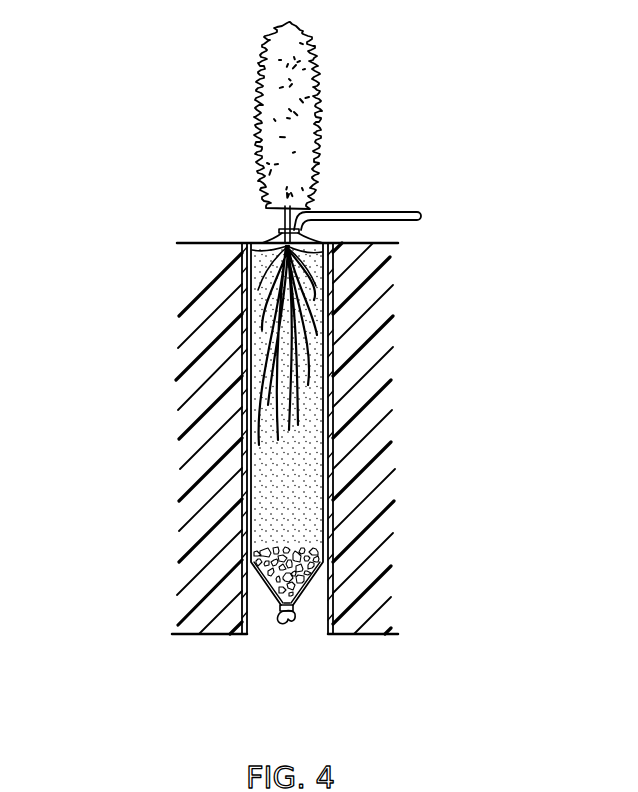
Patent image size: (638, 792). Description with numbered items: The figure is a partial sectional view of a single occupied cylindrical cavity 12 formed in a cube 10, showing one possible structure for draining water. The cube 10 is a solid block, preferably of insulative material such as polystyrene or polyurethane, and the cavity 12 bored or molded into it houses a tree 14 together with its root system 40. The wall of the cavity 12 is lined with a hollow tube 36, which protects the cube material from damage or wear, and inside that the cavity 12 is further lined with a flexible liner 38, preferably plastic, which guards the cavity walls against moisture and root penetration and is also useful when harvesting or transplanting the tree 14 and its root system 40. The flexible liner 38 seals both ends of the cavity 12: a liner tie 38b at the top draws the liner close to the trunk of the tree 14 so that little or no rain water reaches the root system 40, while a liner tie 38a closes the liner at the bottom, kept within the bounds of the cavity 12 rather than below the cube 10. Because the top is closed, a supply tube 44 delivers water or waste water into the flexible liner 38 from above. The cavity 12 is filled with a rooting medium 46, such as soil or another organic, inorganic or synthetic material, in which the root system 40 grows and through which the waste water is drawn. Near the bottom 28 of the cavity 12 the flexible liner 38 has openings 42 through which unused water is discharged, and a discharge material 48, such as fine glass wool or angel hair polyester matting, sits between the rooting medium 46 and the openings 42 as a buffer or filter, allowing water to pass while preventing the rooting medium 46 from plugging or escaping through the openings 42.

The cube 10 is at (172, 470).
The cylindrical cavity 12 is at (306, 243).
The tree 14 is at (317, 97).
The bottom of the cavity 28 is at (299, 597).
The hollow tube 36 is at (333, 270).
The flexible liner 38 is at (323, 326).
The liner tie 38a is at (280, 612).
The liner tie 38b is at (281, 230).
The root system 40 is at (303, 357).
The openings 42 is at (274, 604).
The supply tube 44 is at (345, 212).
The rooting medium 46 is at (302, 455).
The discharge material 48 is at (313, 522).